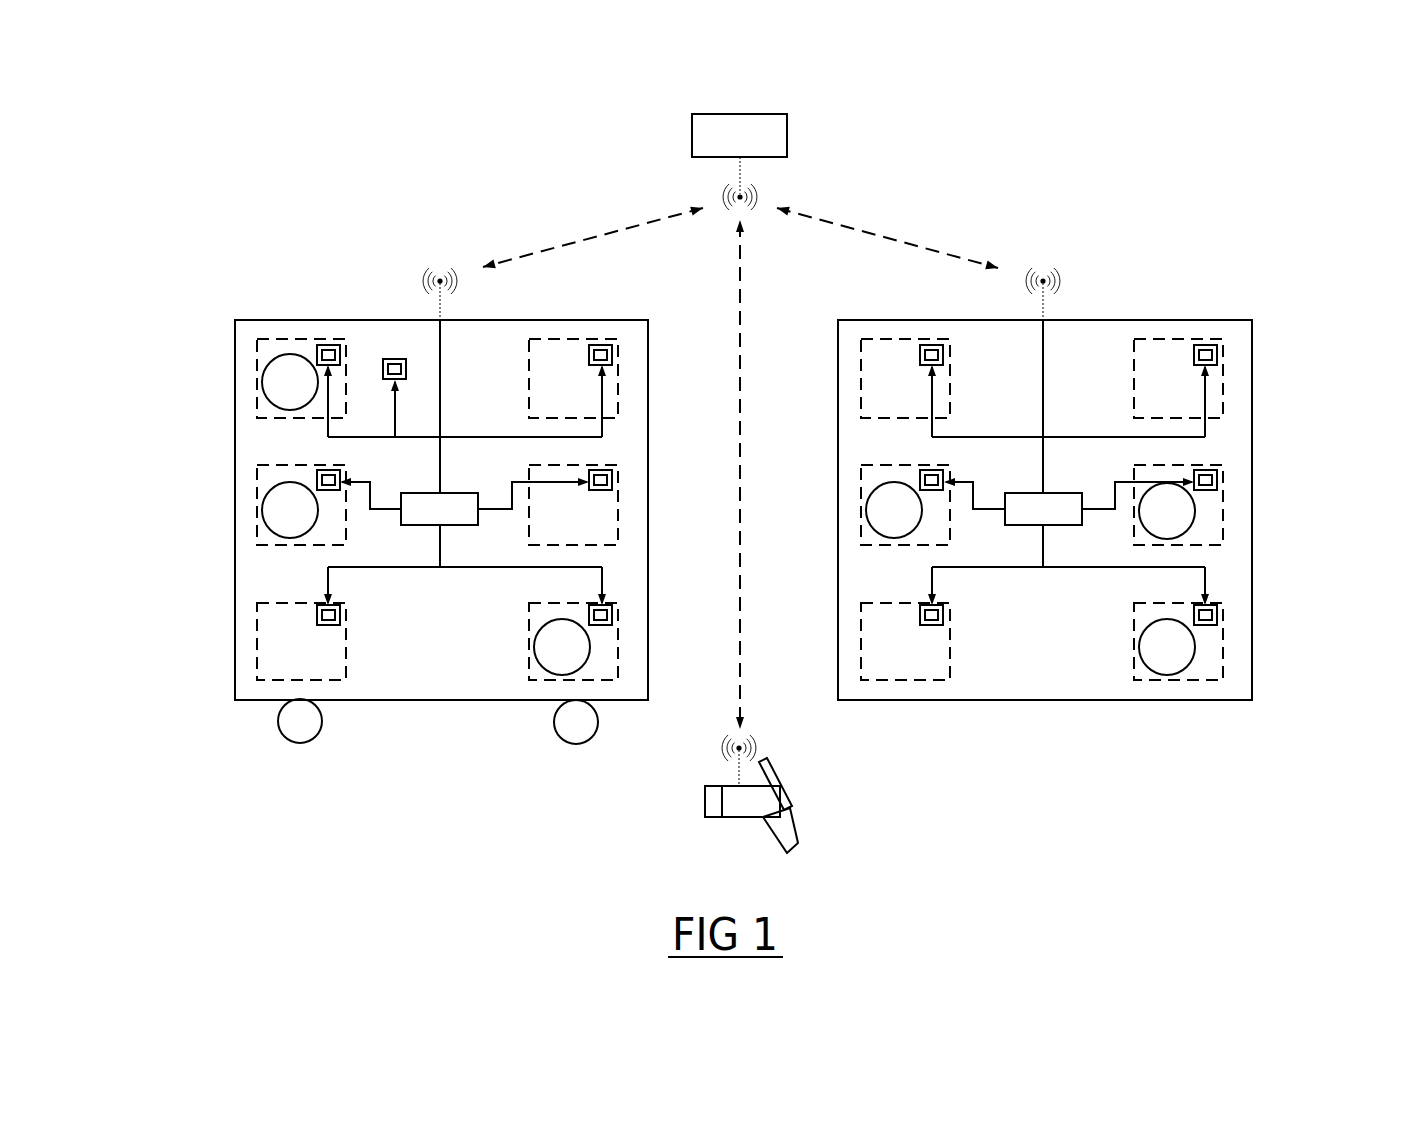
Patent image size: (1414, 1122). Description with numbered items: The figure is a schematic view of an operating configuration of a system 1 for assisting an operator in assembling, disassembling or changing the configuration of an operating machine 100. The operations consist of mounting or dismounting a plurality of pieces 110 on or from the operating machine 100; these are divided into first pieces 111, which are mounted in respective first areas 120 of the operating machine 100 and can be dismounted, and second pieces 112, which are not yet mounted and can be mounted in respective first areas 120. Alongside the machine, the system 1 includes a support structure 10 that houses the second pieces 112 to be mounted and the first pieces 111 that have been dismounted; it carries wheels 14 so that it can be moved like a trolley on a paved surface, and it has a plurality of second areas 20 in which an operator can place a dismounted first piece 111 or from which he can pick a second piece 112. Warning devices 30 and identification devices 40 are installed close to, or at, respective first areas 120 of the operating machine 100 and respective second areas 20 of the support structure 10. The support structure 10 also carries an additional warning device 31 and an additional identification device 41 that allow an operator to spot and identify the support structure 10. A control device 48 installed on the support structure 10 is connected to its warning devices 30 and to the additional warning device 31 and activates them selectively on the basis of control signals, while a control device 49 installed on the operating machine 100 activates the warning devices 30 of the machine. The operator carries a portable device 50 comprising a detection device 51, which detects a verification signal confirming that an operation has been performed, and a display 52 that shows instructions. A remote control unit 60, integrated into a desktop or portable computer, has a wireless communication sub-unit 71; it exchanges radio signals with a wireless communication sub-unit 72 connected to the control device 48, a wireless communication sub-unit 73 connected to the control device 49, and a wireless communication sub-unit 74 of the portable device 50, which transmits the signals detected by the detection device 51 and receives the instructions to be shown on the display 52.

The system 1 is at (425, 155).
The support structure 10 is at (430, 724).
The operating machine 100 is at (1047, 726).
The wheels 14 is at (279, 725).
The second areas 20 is at (257, 405).
The first areas 120 is at (1221, 396).
The warning devices 30 is at (721, 435).
The identification devices 40 is at (318, 350).
The additional warning device 31 is at (257, 266).
The additional identification device 41 is at (387, 362).
The pieces 110 is at (731, 488).
The second pieces 112 is at (257, 357).
The first pieces 111 is at (1196, 517).
The control device 48 is at (423, 525).
The control device 49 is at (1062, 525).
The control unit 60 is at (787, 127).
The wireless communication sub-unit 71 is at (742, 195).
The wireless communication sub-unit 72 is at (440, 281).
The wireless communication sub-unit 73 is at (1045, 281).
The wireless communication sub-unit 74 is at (745, 749).
The portable device 50 is at (750, 820).
The detection device 51 is at (705, 797).
The display 52 is at (792, 805).